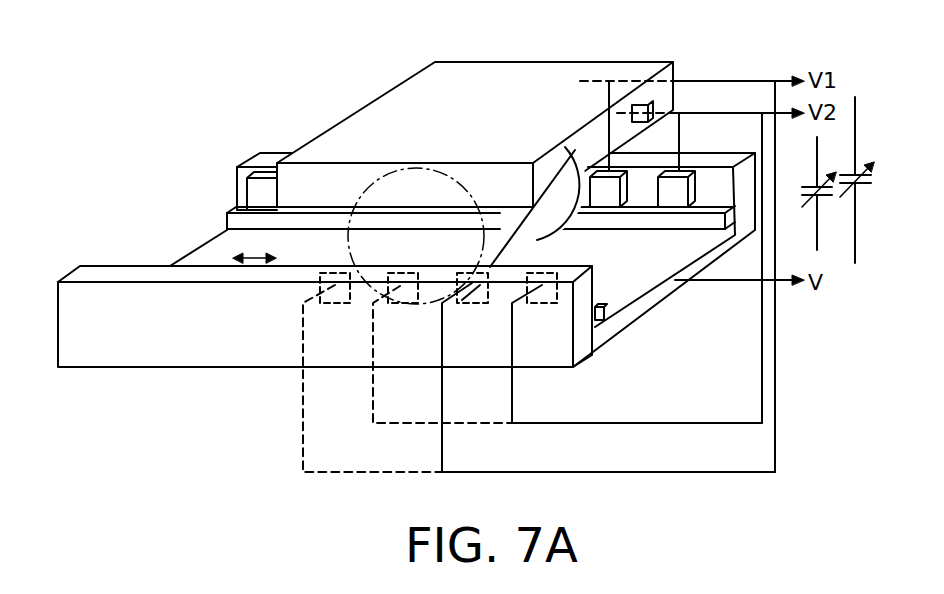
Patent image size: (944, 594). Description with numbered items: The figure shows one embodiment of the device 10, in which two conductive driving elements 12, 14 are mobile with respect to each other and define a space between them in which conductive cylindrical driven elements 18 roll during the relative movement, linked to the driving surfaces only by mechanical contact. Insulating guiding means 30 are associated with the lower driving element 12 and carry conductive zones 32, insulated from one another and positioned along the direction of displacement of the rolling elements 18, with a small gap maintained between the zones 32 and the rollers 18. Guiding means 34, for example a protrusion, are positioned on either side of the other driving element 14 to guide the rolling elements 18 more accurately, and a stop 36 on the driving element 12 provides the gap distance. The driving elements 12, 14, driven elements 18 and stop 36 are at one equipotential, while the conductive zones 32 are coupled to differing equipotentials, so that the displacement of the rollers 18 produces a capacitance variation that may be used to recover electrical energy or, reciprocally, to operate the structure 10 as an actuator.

The device 10 is at (174, 106).
The driving element 12 is at (665, 288).
The driving element 14 is at (385, 108).
The driven element 18 is at (530, 226).
The guiding means 30 is at (177, 352).
The conductive zones 32 is at (260, 183).
The guiding means 34 is at (665, 100).
The stop 36 is at (605, 319).